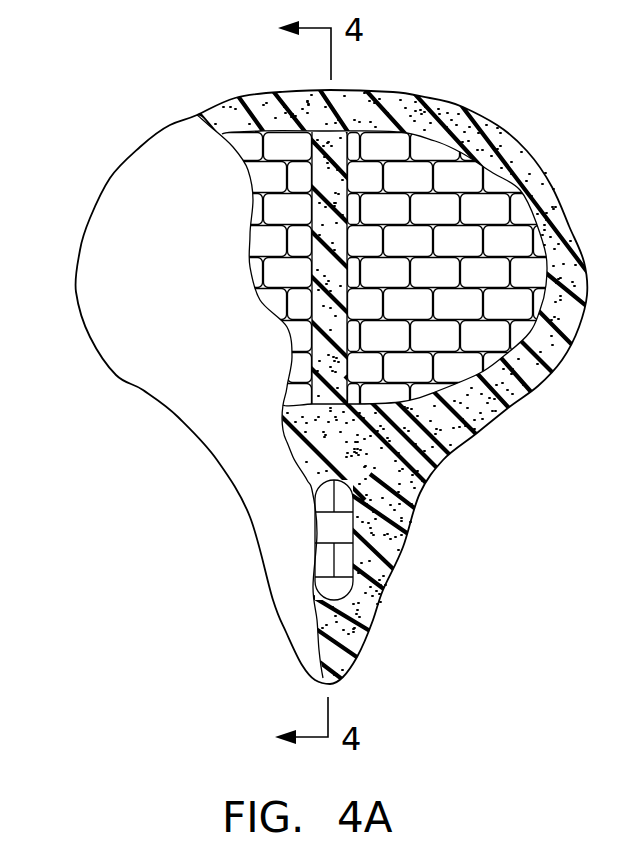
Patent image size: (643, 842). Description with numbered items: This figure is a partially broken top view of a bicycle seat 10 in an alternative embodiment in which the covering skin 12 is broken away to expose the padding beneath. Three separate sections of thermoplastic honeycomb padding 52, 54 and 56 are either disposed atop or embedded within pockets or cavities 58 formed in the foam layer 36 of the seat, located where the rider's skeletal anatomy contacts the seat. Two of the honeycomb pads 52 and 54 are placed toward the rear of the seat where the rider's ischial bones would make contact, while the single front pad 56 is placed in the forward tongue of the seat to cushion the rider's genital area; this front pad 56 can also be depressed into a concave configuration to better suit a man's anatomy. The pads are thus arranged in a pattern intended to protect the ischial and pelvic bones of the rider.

The seat 10 is at (213, 515).
The covering skin 12 is at (125, 205).
The foam layer 36 is at (443, 430).
The honeycomb padding section 52 is at (262, 180).
The honeycomb padding section 54 is at (462, 177).
The front pad 56 is at (342, 532).
The cavities 58 is at (547, 270).